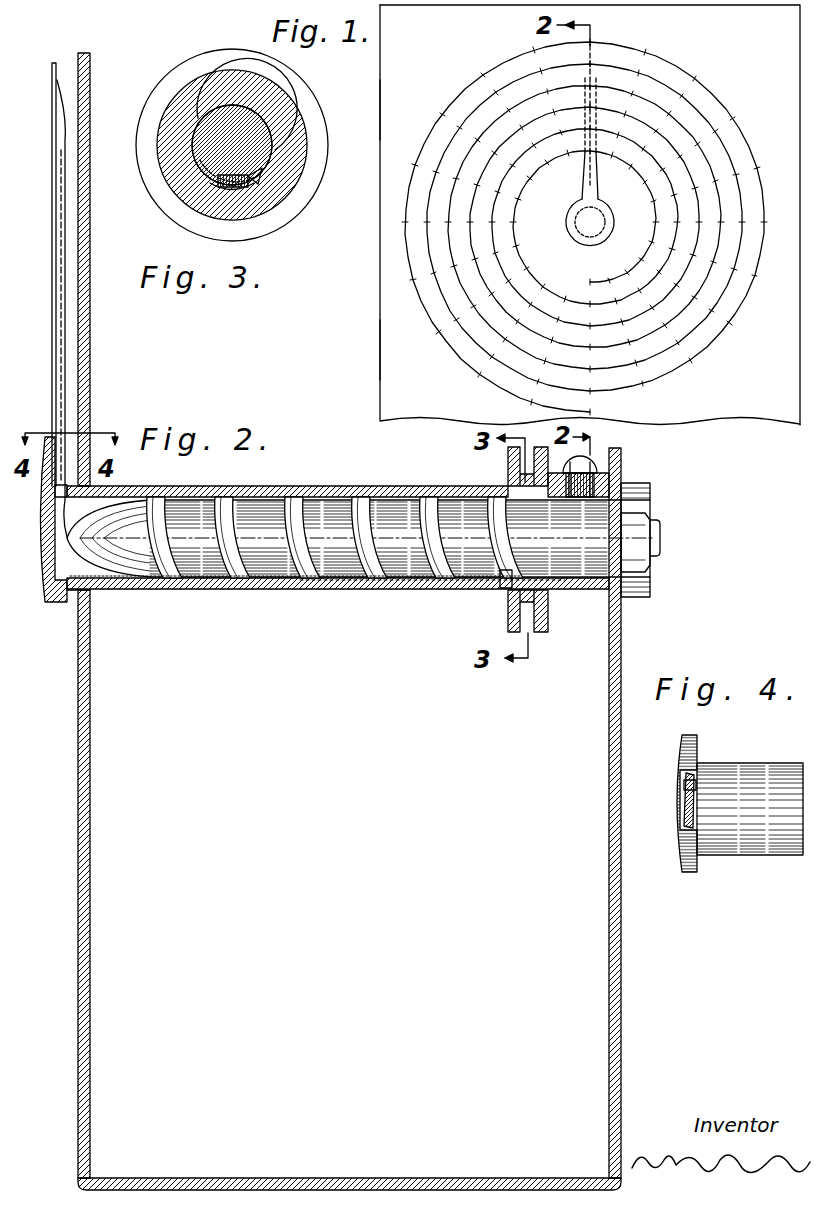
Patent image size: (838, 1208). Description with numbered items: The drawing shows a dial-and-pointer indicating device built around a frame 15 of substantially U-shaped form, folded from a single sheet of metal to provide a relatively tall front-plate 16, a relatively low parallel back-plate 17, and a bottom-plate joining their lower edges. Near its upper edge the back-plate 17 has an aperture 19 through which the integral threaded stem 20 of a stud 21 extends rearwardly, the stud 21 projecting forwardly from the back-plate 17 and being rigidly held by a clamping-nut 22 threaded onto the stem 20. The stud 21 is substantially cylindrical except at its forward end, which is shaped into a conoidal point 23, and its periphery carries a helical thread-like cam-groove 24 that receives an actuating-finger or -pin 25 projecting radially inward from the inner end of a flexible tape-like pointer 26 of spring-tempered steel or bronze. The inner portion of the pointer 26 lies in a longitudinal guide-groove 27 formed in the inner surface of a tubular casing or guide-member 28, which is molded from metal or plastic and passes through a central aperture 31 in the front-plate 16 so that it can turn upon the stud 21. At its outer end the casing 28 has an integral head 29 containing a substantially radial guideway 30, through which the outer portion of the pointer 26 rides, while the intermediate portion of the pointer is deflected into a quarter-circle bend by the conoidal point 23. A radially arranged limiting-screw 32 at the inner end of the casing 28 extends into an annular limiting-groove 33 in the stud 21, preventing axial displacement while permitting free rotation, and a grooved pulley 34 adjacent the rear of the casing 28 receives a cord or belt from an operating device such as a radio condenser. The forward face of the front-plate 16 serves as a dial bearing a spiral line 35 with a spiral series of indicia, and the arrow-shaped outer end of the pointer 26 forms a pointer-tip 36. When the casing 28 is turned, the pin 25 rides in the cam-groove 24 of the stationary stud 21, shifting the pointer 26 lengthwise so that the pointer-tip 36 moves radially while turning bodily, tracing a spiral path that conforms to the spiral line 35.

In FIG. 1, the frame 15 is at (380, 108).
In FIG. 2, the frame 15 is at (118, 1178).
In FIG. 1, the front-plate 16 is at (383, 341).
In FIG. 2, the front-plate 16 is at (90, 350).
In FIG. 2, the back-plate 17 is at (606, 831).
In FIG. 2, the aperture 19 is at (633, 486).
In FIG. 2, the threaded stem 20 is at (658, 520).
In FIG. 3, the stud 21 is at (236, 100).
In FIG. 2, the stud 21 is at (330, 486).
In FIG. 2, the clamping-nut 22 is at (640, 592).
In FIG. 2, the conoidal point 23 is at (88, 537).
In FIG. 3, the cam-groove 24 is at (204, 172).
In FIG. 2, the cam-groove 24 is at (178, 589).
In FIG. 3, the actuating-finger or -pin 25 is at (216, 182).
In FIG. 2, the actuating-finger or -pin 25 is at (502, 588).
In FIG. 3, the flexible tape-like pointer 26 is at (224, 188).
In FIG. 2, the flexible tape-like pointer 26 is at (206, 589).
In FIG. 4, the flexible tape-like pointer 26 is at (686, 785).
In FIG. 3, the guide-groove 27 is at (258, 184).
In FIG. 2, the guide-groove 27 is at (318, 590).
In FIG. 1, the tubular casing or guide-member 28 is at (573, 233).
In FIG. 3, the tubular casing or guide-member 28 is at (158, 141).
In FIG. 2, the tubular casing or guide-member 28 is at (278, 590).
In FIG. 4, the tubular casing or guide-member 28 is at (775, 858).
In FIG. 1, the head 29 is at (575, 209).
In FIG. 2, the head 29 is at (45, 538).
In FIG. 4, the head 29 is at (677, 836).
In FIG. 2, the guideway 30 is at (60, 492).
In FIG. 4, the guideway 30 is at (706, 770).
In FIG. 2, the central aperture 31 is at (92, 590).
In FIG. 2, the limiting-screw 32 is at (583, 465).
In FIG. 2, the annular limiting-groove 33 is at (587, 578).
In FIG. 3, the grooved pulley 34 is at (186, 68).
In FIG. 2, the grooved pulley 34 is at (536, 633).
In FIG. 1, the spiral line 35 is at (450, 343).
In FIG. 1, the pointer-tip 36 is at (586, 166).
In FIG. 2, the pointer-tip 36 is at (52, 330).